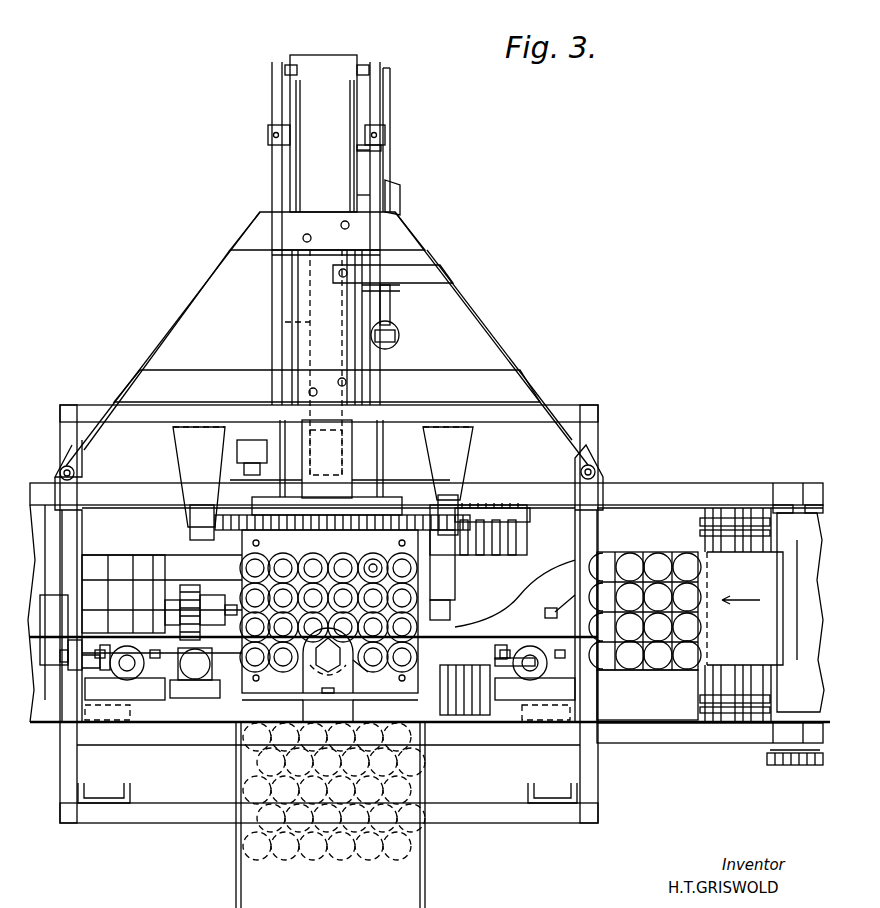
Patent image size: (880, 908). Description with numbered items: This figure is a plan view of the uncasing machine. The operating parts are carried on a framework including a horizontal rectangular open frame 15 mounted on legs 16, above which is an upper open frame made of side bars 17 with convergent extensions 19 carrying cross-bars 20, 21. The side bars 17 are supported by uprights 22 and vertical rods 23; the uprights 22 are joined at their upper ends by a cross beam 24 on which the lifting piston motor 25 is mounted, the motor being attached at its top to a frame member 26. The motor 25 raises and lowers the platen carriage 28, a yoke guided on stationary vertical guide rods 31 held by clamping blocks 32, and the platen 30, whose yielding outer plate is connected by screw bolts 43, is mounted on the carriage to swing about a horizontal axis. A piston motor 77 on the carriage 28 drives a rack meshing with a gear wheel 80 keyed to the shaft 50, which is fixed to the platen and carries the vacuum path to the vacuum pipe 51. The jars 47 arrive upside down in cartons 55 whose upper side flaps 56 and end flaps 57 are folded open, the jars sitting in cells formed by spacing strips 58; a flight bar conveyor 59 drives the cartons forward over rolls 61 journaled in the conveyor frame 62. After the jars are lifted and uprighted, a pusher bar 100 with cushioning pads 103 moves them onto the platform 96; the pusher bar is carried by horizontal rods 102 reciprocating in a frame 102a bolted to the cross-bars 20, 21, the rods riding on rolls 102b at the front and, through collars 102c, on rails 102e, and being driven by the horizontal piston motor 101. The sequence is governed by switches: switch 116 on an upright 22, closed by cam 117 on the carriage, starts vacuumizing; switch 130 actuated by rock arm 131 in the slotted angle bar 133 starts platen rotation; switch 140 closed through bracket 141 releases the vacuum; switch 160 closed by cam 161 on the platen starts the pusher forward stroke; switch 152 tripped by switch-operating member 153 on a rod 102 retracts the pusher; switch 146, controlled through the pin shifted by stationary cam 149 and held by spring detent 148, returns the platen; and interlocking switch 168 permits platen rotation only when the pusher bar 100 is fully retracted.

The horizontal rectangular open frame 15 is at (598, 773).
The legs 16 is at (542, 796).
The side bars 17 is at (80, 526).
The convergent extensions 19 is at (220, 277).
The cross-bar 20 is at (500, 382).
The cross-bar 21 is at (393, 230).
The uprights 22 is at (328, 725).
The vertical rods 23 is at (76, 474).
The cross beam 24 is at (508, 712).
The piston motor 25 is at (367, 673).
The frame member 26 is at (356, 710).
The platen carriage 28 is at (476, 640).
The platen 30 is at (329, 611).
The vertical guide rods 31 is at (120, 670).
The clamping blocks 32 is at (150, 680).
The screw bolts 43 is at (262, 678).
The jars 47 is at (398, 560).
The shaft 50 is at (228, 605).
The vacuum pipe 51 is at (500, 600).
The cartons 55 is at (118, 580).
The upper side flaps 56 is at (125, 512).
The end flaps 57 is at (793, 556).
The spacing strips 58 is at (145, 580).
The flight bar conveyor 59 is at (500, 508).
The rolls 61 is at (470, 718).
The conveyor frame 62 is at (690, 483).
The piston motor 77 is at (208, 678).
The gear wheel 80 is at (193, 588).
The platform 96 is at (405, 875).
The pusher bar 100 is at (393, 508).
The piston motor 101 is at (286, 321).
The horizontal rods 102 is at (278, 172).
The frame 102a is at (326, 64).
The rolls 102b is at (385, 462).
The collars 102c is at (378, 137).
The rails 102e is at (296, 107).
The pads 103 is at (262, 508).
The switch 116 is at (496, 652).
The cam 117 is at (545, 613).
The switch 130 is at (48, 613).
The rock arm 131 is at (80, 640).
The angle bar 133 is at (106, 645).
The switch 140 is at (448, 495).
The bracket 141 is at (450, 548).
The switch 146 is at (400, 337).
The spring detent 148 is at (382, 148).
The stationary cam 149 is at (401, 196).
The switch 152 is at (388, 300).
The switch-operating member 153 is at (391, 92).
The switch 160 is at (202, 515).
The cam 161 is at (296, 541).
The interlocking switch 168 is at (250, 450).